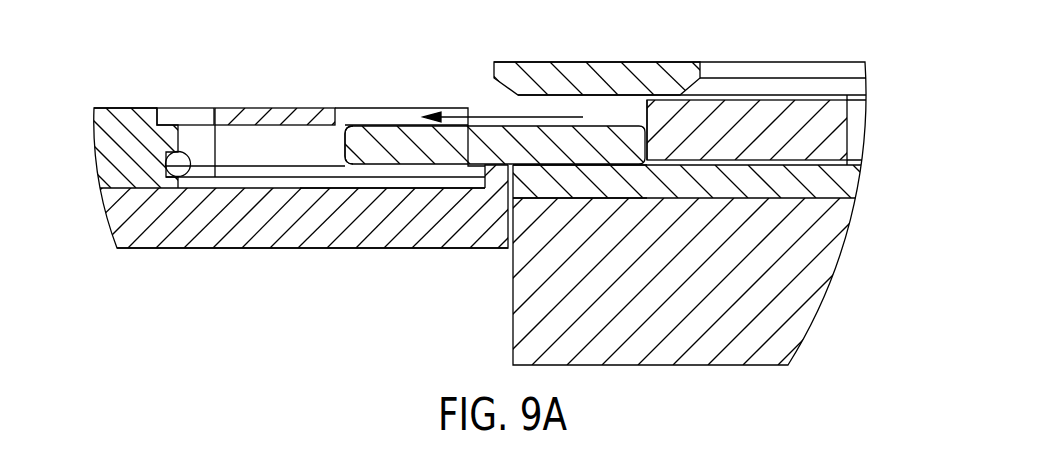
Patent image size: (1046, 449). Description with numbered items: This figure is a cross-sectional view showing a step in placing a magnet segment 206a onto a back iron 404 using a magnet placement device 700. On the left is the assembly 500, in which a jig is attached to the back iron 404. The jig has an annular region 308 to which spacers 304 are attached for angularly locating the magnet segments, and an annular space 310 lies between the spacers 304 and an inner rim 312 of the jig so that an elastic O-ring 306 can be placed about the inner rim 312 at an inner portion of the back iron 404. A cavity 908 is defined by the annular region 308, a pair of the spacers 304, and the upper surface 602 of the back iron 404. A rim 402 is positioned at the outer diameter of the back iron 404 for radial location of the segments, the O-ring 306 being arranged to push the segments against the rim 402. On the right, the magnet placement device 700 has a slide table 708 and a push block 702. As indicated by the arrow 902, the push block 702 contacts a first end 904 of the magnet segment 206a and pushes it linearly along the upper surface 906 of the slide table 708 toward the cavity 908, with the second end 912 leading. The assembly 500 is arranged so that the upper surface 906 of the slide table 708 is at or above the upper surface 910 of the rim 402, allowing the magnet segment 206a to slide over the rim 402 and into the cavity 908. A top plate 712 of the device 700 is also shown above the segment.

The assembly 500 is at (86, 86).
The inner rim 312 is at (172, 134).
The annular space 310 is at (200, 132).
The annular region 308 is at (280, 117).
The spacers 304 is at (348, 108).
The magnet segment 206a is at (410, 125).
The cavity 908 is at (240, 160).
The elastic O-ring 306 is at (165, 168).
The arrow 902 is at (497, 164).
The second end 912 is at (340, 140).
The upper surface of the rim 910 is at (445, 115).
The back iron 404 is at (145, 232).
The upper surface of the back iron 602 is at (407, 188).
The rim 402 is at (497, 177).
The magnet placement device 700 is at (888, 84).
The top plate of mating assembly 712 is at (597, 62).
The push block 702 is at (857, 130).
The first end 904 is at (652, 140).
The slide table 708 is at (852, 180).
The upper surface of the slide table 906 is at (600, 170).